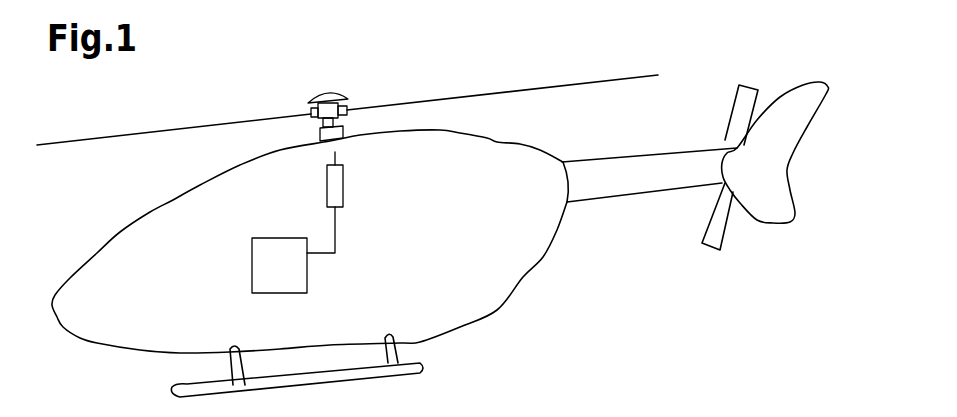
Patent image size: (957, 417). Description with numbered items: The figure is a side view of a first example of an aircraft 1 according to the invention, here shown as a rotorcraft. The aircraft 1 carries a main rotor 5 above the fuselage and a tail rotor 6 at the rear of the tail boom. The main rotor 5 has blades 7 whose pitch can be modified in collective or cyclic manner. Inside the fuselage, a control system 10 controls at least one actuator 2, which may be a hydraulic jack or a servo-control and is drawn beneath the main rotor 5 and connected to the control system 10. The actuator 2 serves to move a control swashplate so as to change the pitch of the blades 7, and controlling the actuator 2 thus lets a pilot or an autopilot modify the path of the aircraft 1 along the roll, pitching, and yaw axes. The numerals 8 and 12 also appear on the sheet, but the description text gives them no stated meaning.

The helicopter 1 is at (440, 249).
The sensor 2 is at (343, 177).
The main rotor 5 is at (347, 75).
The tail rotor 6 is at (743, 103).
The rotor blade 7 is at (205, 124).
The ground 8 is at (640, 401).
The control unit 10 is at (252, 255).
The landing skid 12 is at (342, 375).